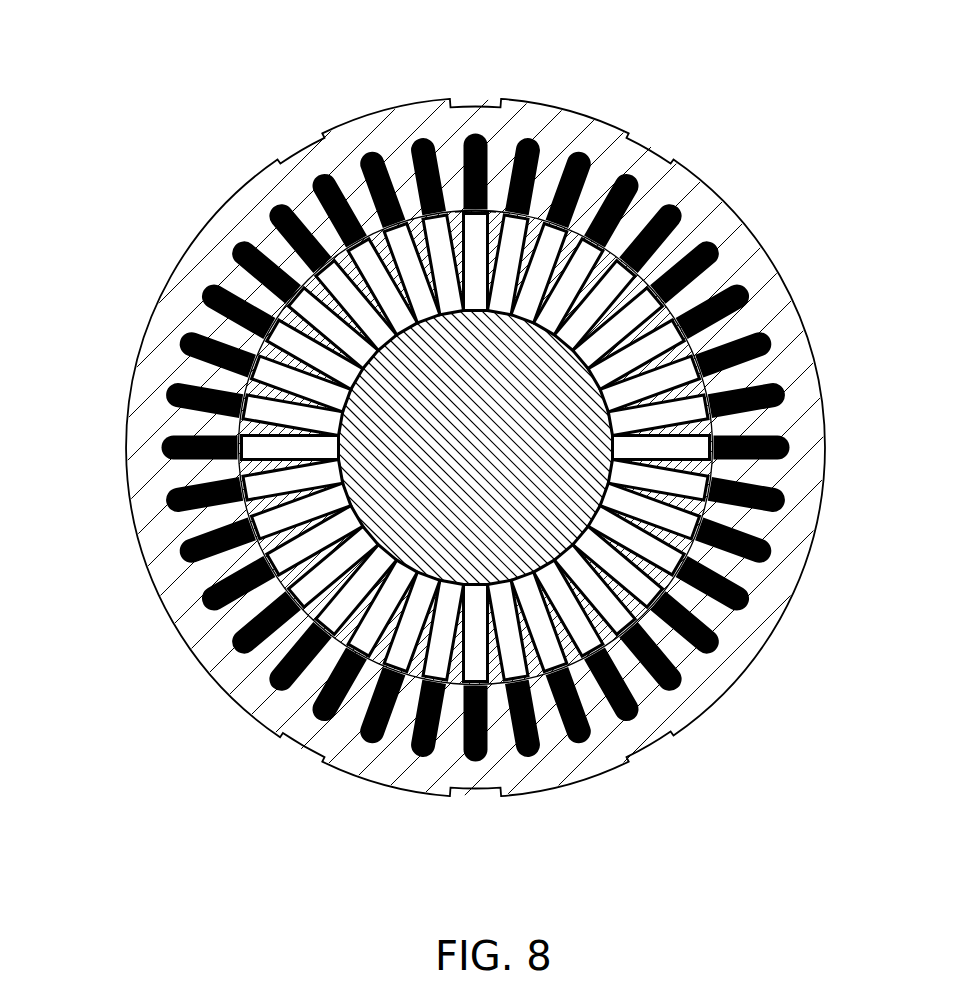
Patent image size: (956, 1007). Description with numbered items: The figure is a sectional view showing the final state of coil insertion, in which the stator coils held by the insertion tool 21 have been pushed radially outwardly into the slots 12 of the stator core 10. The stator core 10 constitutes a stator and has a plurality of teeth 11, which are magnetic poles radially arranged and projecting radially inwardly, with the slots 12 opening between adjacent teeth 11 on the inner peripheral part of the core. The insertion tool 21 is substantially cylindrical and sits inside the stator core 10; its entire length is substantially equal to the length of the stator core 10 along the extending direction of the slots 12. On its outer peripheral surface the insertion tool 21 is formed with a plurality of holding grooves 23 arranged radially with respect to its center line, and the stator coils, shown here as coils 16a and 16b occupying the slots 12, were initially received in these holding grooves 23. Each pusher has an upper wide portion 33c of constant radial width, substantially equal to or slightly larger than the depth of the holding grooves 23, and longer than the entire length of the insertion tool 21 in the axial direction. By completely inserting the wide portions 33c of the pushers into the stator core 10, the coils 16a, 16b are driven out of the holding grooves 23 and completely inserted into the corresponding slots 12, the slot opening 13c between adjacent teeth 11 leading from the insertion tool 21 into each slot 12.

The stator core 10 is at (478, 403).
The teeth 11 is at (330, 160).
The slots 12 is at (347, 173).
The slot 13c is at (455, 215).
The first coil 16a is at (412, 138).
The second coil 16b is at (485, 138).
The insertion tool 21 is at (263, 430).
The holding grooves 23 is at (330, 288).
The wide portion 33c is at (330, 638).